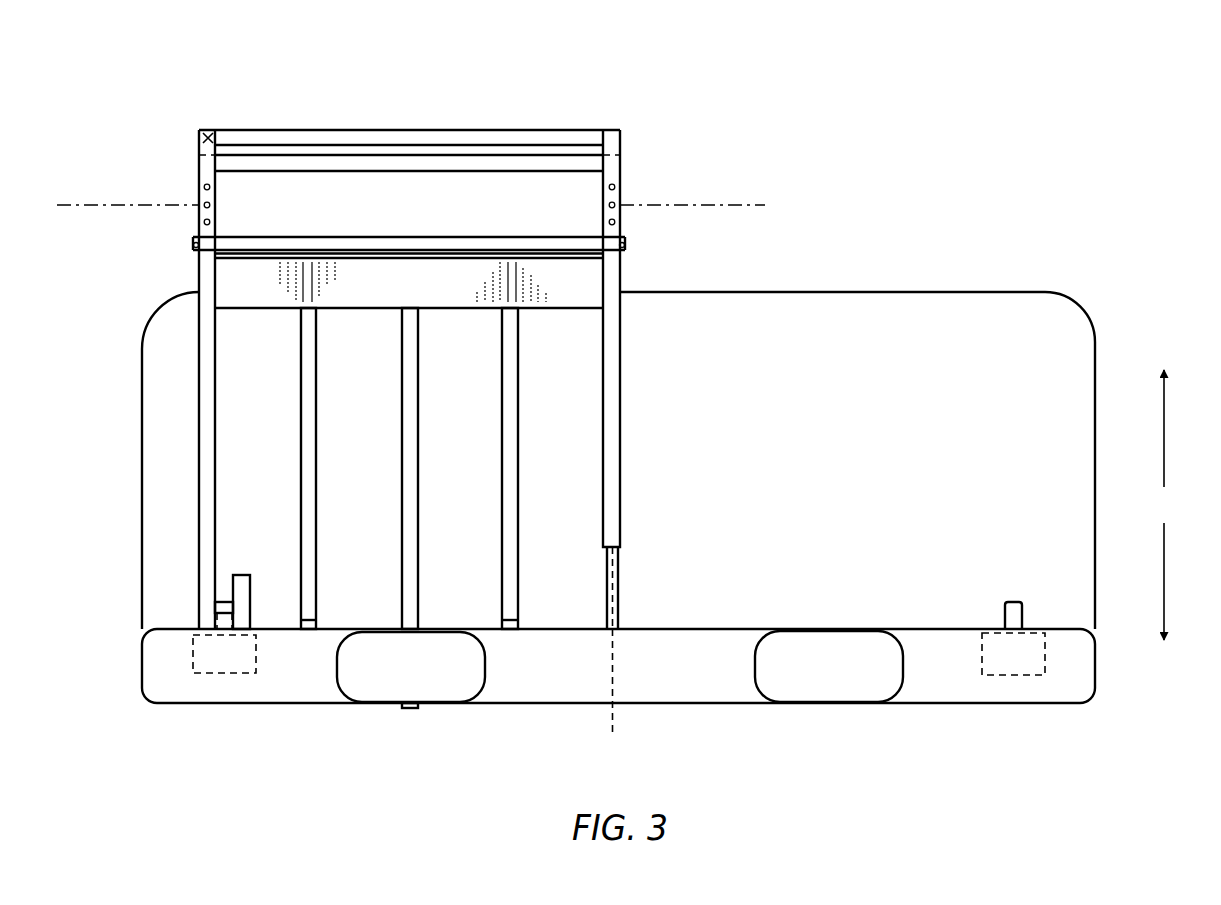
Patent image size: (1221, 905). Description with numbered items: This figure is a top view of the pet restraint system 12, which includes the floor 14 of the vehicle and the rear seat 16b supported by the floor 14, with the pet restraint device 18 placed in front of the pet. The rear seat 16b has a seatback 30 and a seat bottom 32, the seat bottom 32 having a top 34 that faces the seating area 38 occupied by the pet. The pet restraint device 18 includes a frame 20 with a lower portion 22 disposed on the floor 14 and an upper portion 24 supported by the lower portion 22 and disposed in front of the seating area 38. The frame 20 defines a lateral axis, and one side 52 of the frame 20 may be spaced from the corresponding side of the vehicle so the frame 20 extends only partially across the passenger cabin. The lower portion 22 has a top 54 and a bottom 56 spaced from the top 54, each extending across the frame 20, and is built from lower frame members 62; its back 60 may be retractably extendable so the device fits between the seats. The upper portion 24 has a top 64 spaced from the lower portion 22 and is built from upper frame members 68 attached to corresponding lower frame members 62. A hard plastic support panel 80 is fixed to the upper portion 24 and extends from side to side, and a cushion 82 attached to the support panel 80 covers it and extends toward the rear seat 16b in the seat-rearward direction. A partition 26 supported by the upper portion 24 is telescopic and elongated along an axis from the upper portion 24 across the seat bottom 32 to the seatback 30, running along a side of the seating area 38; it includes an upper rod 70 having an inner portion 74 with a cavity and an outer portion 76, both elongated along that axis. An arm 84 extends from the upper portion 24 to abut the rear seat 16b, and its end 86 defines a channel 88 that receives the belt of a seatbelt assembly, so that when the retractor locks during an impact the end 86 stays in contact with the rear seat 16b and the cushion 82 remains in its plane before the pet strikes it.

The pet restraint system 12 is at (717, 60).
The floor 14 is at (871, 188).
The rear seat 16b is at (1098, 318).
The pet restraint device 18 is at (416, 116).
The frame 20 is at (195, 233).
The lower portion 22 is at (614, 127).
The upper portion 24 is at (334, 235).
The partition 26 is at (624, 417).
The seatback 30 is at (913, 704).
The seat bottom 32 is at (957, 292).
The top 34 is at (888, 468).
The seating area 38 is at (451, 393).
The side 52 is at (620, 172).
The top 54 is at (368, 152).
The bottom 56 is at (321, 128).
The back 60 is at (203, 130).
The lower frame members 62 is at (292, 153).
The top 64 is at (465, 235).
The upper frame members 68 is at (397, 250).
The upper rod 70 is at (624, 458).
The inner portion 74 is at (620, 497).
The outer portion 76 is at (618, 587).
The support panel 80 is at (555, 256).
The cushion 82 is at (563, 308).
The arm 84 is at (200, 388).
The end 86 is at (250, 595).
The channel 88 is at (228, 548).